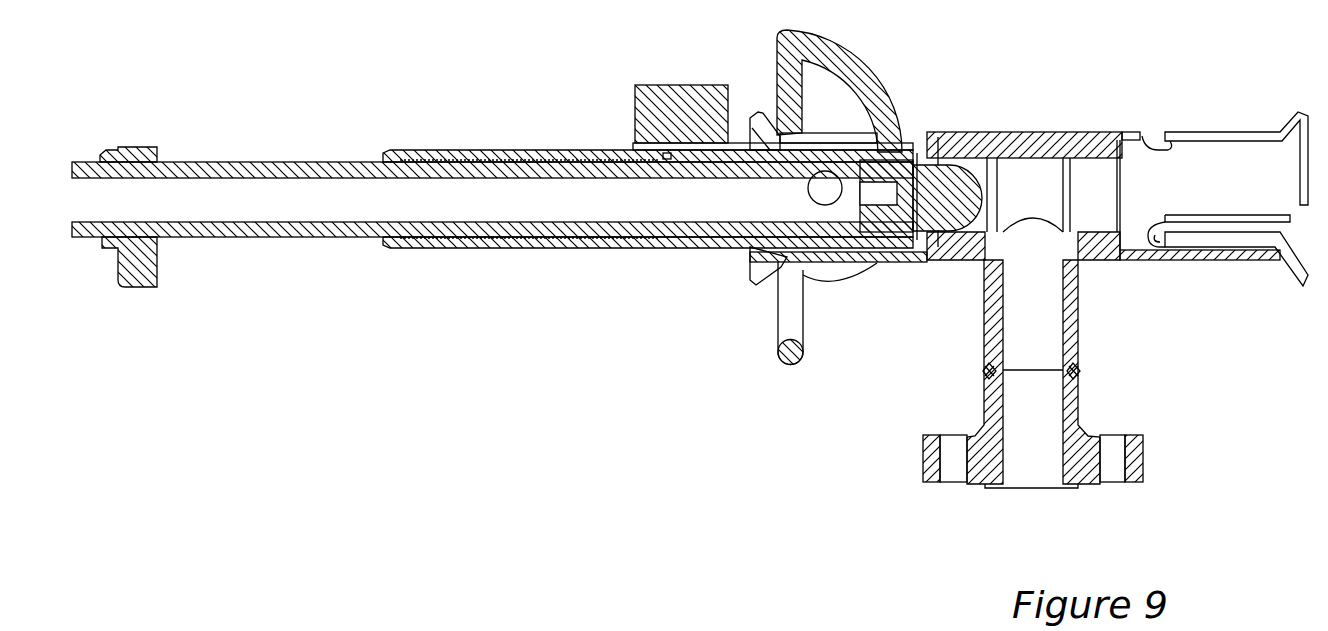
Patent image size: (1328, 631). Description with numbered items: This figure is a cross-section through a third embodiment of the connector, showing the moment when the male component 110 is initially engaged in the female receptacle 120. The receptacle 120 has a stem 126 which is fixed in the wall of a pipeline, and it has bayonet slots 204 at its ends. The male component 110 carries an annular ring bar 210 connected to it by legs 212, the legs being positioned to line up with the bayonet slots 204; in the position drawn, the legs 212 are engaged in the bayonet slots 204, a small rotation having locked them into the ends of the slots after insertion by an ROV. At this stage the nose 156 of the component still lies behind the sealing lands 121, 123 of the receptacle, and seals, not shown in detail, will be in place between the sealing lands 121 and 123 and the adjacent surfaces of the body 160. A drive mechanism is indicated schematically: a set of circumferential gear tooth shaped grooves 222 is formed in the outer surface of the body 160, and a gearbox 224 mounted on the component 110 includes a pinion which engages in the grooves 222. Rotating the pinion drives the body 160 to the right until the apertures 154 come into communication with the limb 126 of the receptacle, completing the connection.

The male component 110 is at (478, 130).
The female receptacle 120 is at (1121, 117).
The sealing land 121 is at (1019, 218).
The sealing land 123 is at (1103, 167).
The stem 126 is at (1076, 328).
The apertures 154 is at (833, 170).
The nose 156 is at (955, 182).
The body 160 is at (309, 234).
The bayonet slots 204 is at (823, 133).
The annular ring bar 210 is at (778, 68).
The legs 212 is at (866, 62).
The circumferential gear tooth shaped grooves 222 is at (548, 240).
The gearbox 224 is at (653, 95).